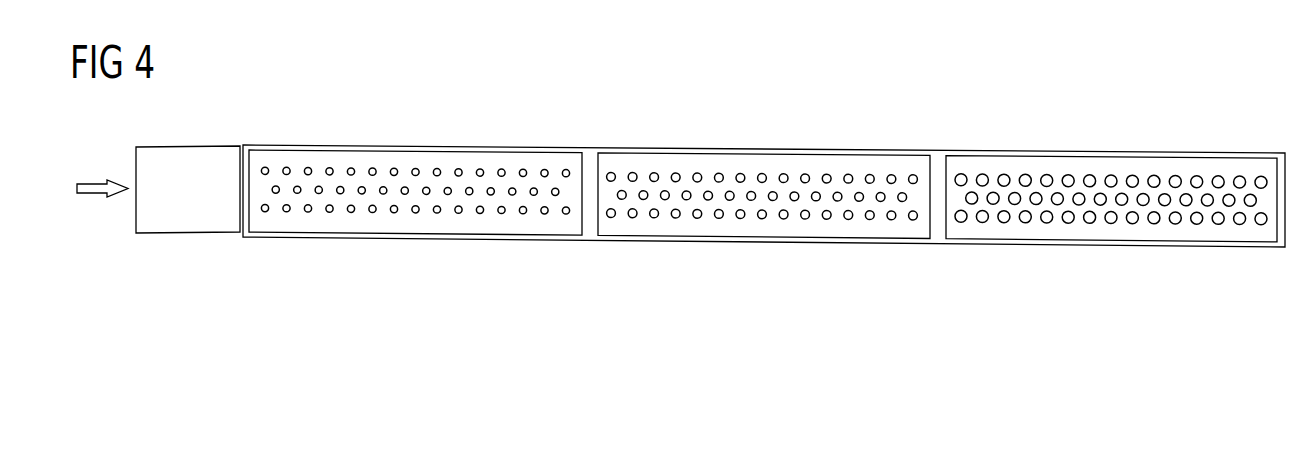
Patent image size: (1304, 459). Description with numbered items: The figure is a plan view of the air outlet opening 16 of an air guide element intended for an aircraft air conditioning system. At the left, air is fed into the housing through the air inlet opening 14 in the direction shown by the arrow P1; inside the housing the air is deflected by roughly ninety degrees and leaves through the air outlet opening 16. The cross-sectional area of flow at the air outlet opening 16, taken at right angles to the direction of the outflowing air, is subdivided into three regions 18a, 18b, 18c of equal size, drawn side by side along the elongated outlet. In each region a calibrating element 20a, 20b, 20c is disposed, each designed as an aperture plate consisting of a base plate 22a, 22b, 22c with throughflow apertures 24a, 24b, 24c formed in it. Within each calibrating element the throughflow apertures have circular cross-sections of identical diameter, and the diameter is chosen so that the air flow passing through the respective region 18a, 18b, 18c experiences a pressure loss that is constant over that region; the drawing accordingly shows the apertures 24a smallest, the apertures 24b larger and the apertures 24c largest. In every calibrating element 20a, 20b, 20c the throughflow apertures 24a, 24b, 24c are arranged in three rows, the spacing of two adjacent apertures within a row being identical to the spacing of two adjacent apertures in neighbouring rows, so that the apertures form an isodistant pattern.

The arrow indicating air inflow direction P1 is at (98, 183).
The air inlet opening 14 is at (136, 213).
The air outlet opening 16 is at (860, 244).
The first region of the cross-sectional area of flow 18a is at (415, 214).
The second region of the cross-sectional area of flow 18b is at (764, 217).
The third region of the cross-sectional area of flow 18c is at (1111, 221).
The first calibrating element 20a is at (425, 157).
The second calibrating element 20b is at (772, 160).
The third calibrating element 20c is at (1123, 165).
The base plate of first calibrating element 22a is at (415, 154).
The base plate of second calibrating element 22b is at (762, 160).
The base plate of third calibrating element 22c is at (1111, 165).
The throughflow apertures of first calibrating element 24a is at (308, 168).
The throughflow apertures of second calibrating element 24b is at (654, 173).
The throughflow apertures of third calibrating element 24c is at (1003, 173).